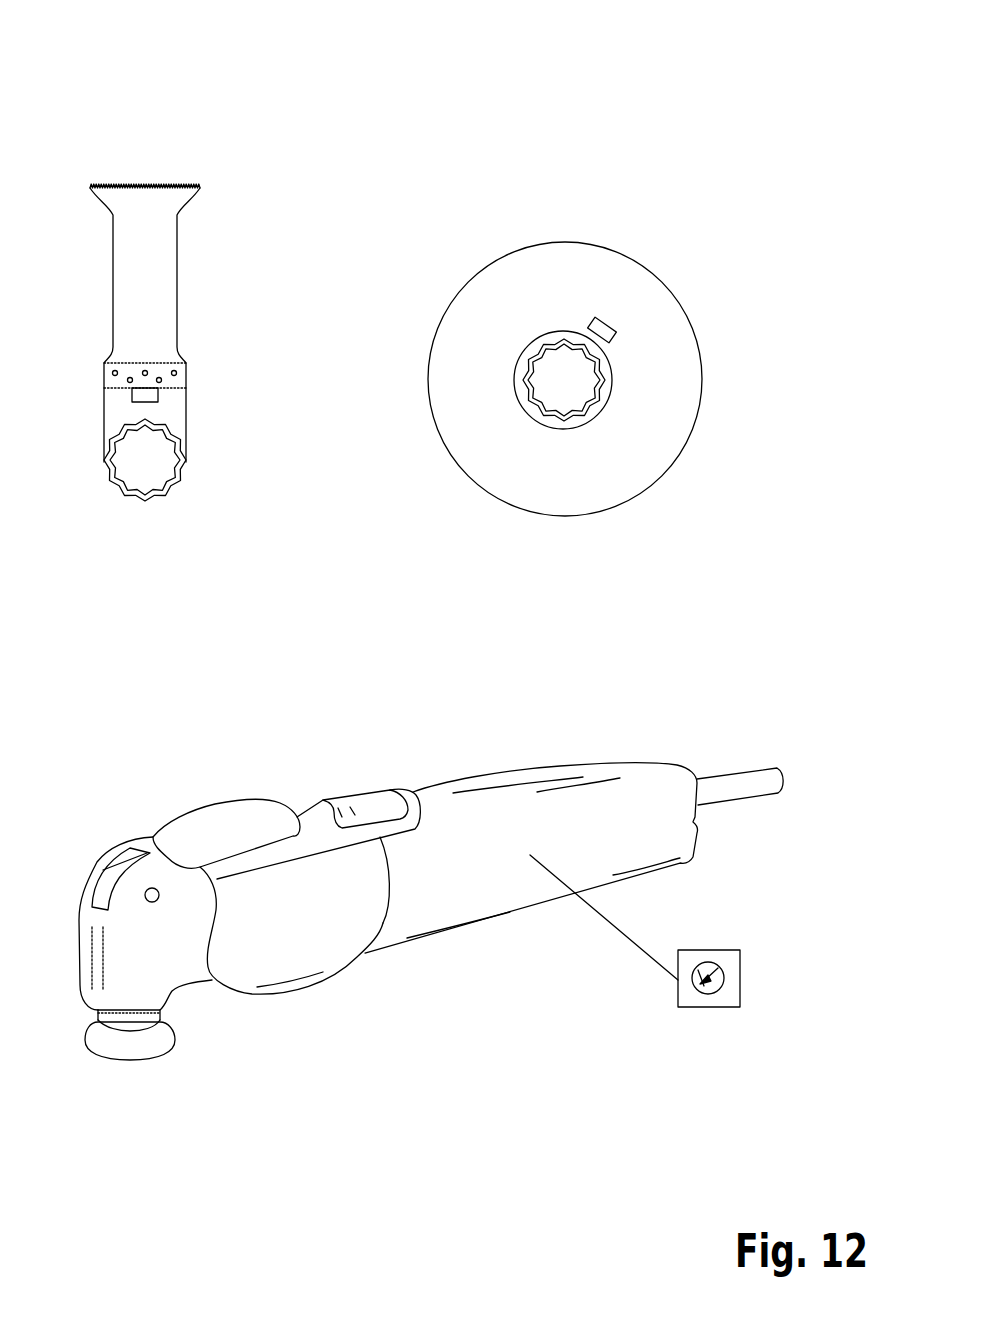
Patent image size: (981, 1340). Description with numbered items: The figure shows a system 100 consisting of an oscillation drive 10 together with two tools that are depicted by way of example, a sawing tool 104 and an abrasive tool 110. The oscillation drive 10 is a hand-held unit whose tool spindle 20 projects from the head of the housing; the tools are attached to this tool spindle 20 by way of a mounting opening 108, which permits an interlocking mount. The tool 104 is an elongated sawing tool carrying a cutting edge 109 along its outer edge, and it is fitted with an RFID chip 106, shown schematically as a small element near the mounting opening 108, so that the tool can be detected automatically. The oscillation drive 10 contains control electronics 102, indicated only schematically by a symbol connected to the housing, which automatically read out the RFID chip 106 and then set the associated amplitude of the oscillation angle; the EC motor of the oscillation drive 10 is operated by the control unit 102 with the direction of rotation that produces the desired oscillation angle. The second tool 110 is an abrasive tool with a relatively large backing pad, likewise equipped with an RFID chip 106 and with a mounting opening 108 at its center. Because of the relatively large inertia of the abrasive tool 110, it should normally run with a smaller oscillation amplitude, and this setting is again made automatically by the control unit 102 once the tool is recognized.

The oscillation drive 10 is at (210, 766).
The tool spindle 20 is at (133, 1047).
The system 100 is at (698, 93).
The control electronics 102 is at (728, 1008).
The sawing tool 104 is at (204, 278).
The RFID chip 106 is at (150, 396).
The mounting opening 108 is at (150, 464).
The cutting edge 109 is at (148, 187).
The abrasive tool 110 is at (728, 287).